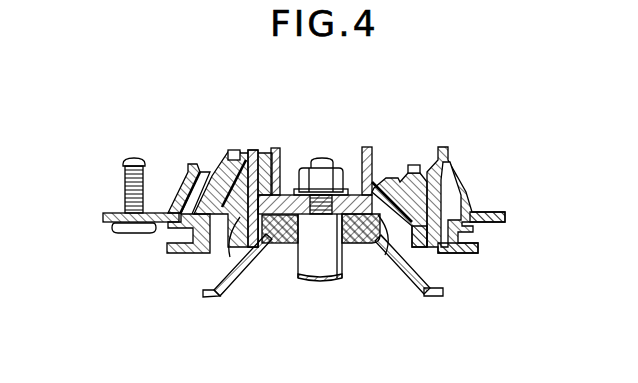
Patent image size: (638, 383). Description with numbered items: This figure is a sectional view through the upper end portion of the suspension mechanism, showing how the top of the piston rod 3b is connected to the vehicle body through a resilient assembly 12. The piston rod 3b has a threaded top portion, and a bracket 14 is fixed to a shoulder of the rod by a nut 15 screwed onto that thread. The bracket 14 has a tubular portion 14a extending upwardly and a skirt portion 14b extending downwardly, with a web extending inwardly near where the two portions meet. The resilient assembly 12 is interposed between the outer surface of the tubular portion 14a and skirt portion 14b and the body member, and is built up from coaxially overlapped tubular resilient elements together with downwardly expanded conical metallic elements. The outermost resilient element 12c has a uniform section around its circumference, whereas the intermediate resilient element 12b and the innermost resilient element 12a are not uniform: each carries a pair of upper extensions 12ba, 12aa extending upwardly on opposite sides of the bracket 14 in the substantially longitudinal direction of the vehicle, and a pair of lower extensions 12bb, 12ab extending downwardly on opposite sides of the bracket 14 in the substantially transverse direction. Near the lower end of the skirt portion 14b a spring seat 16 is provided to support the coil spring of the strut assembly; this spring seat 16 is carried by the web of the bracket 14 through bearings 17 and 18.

The piston rod 3b is at (342, 262).
The resilient assembly 12 is at (328, 190).
The innermost resilient element 12a is at (412, 165).
The upper extension of innermost resilient element 12aa is at (258, 150).
The lower extension of innermost resilient element 12ab is at (412, 250).
The intermediate resilient element 12b is at (203, 177).
The upper extension of intermediate resilient element 12ba is at (238, 150).
The lower extension of intermediate resilient element 12bb is at (436, 252).
The outermost resilient element 12c is at (170, 226).
The bracket 14 is at (287, 196).
The tubular portion of bracket 14a is at (372, 178).
The skirt portion of bracket 14b is at (232, 222).
The nut 15 is at (327, 178).
The spring seat 16 is at (233, 297).
The bearing 17 is at (382, 242).
The bearing 18 is at (268, 245).